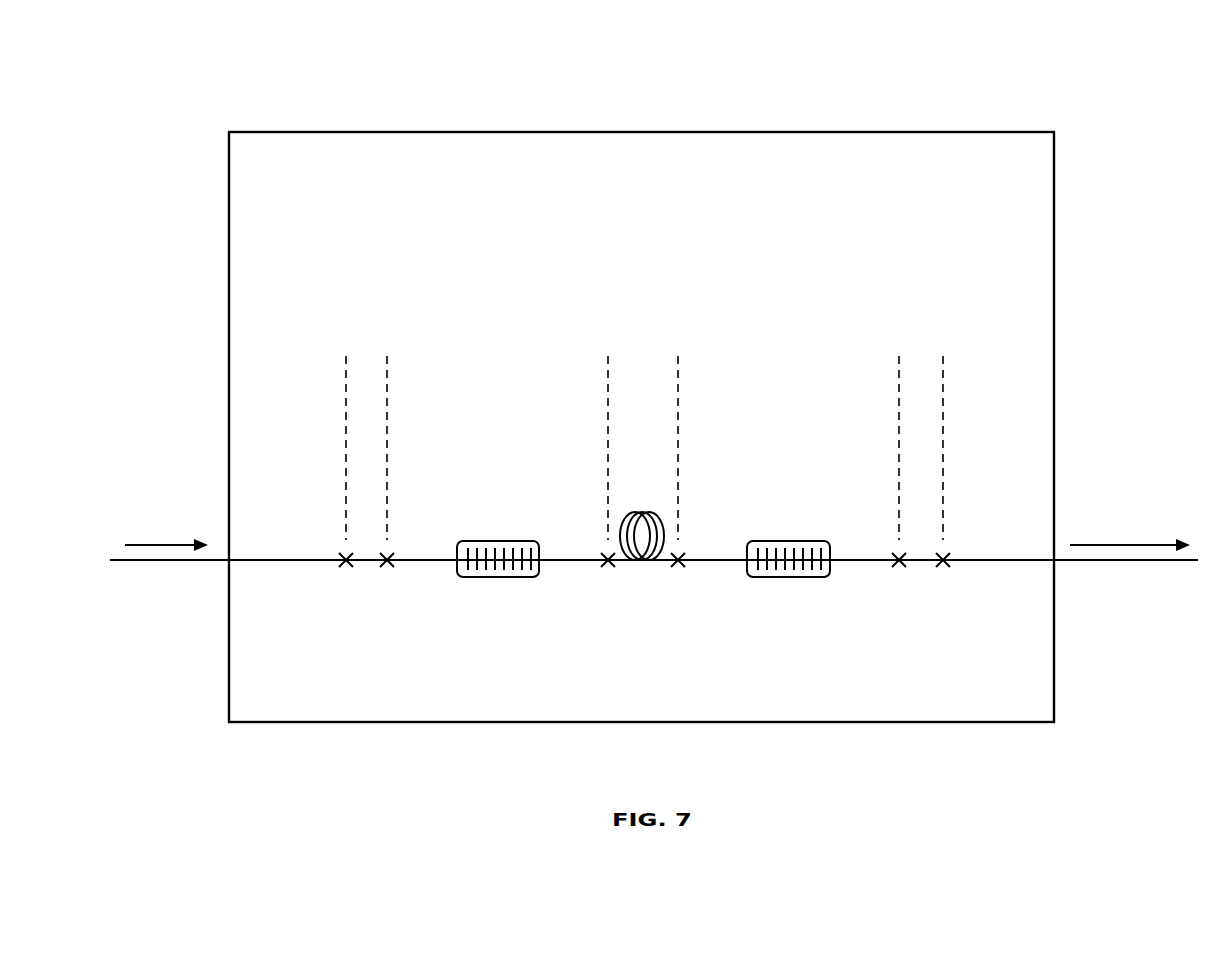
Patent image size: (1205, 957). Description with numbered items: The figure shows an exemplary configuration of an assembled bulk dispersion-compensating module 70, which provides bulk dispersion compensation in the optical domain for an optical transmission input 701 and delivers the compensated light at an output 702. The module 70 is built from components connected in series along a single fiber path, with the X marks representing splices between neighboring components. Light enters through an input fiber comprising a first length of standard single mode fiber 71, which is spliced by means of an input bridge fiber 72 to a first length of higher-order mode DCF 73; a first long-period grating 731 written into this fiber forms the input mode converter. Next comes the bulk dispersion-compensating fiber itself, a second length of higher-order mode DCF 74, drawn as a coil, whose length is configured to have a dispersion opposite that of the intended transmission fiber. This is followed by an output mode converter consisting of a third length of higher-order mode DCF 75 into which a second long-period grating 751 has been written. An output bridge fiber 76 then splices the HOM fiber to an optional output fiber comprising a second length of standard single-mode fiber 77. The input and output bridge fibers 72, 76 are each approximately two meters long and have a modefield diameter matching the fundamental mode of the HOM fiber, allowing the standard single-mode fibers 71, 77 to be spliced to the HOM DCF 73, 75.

The bulk dispersion-compensating module 70 is at (641, 427).
The optical transmission input 701 is at (166, 522).
The output 702 is at (1130, 522).
The standard single mode fiber 71 is at (228, 533).
The standard single-mode fiber 77 is at (1070, 533).
The input bridge fiber 72 is at (346, 347).
The higher-order mode DCF 73 is at (387, 427).
The higher-order mode DCF 74 is at (608, 347).
The higher-order mode DCF 75 is at (678, 427).
The output bridge fiber 76 is at (899, 347).
The first long-period grating 731 is at (498, 596).
The second long-period grating 751 is at (790, 596).